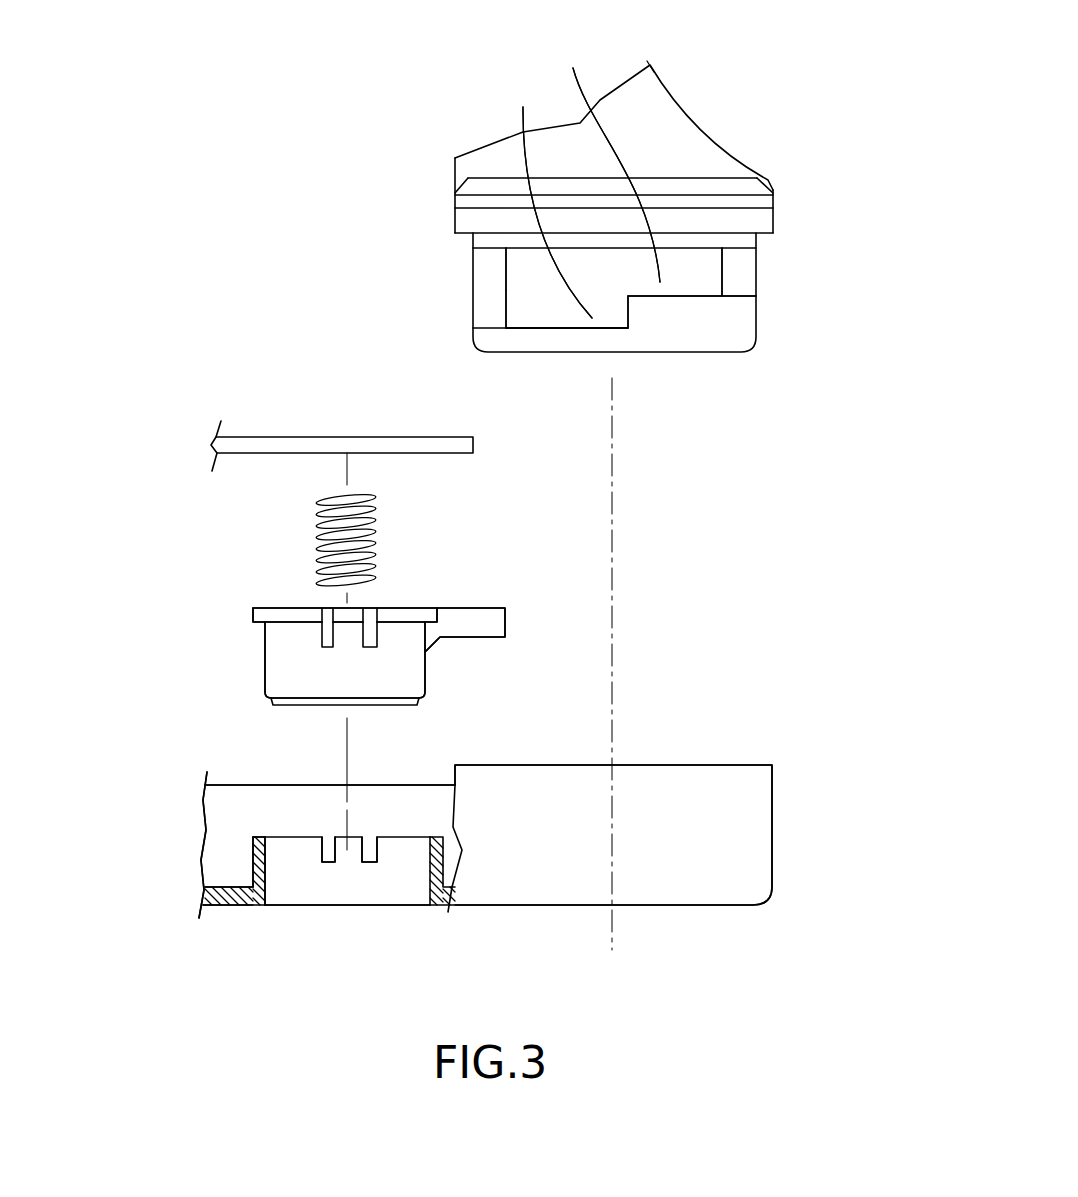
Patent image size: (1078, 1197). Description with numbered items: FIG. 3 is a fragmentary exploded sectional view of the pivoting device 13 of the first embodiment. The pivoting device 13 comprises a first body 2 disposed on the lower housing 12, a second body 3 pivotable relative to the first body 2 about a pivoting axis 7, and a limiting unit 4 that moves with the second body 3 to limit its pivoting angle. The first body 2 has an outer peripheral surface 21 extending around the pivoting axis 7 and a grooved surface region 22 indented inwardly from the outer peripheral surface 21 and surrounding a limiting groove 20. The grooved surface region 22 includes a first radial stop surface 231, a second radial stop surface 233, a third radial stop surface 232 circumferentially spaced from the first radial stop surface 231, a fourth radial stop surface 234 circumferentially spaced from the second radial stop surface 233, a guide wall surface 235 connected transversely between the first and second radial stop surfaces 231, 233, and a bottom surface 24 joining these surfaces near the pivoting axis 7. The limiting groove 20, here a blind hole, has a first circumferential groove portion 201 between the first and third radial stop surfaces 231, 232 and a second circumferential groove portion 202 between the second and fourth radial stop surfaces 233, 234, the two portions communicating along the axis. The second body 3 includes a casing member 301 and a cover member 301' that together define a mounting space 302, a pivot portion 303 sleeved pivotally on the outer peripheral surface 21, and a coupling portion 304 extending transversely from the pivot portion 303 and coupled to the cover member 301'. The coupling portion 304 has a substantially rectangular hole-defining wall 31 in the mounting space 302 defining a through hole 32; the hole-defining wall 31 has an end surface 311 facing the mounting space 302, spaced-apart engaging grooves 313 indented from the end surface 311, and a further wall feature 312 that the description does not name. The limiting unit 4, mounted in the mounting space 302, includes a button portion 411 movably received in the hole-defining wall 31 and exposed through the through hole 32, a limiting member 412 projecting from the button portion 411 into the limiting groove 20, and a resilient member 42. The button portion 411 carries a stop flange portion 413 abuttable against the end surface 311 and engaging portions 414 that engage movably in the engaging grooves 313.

The first body 2 is at (466, 215).
The lower housing 12 is at (657, 110).
The pivoting device 13 is at (298, 295).
The limiting groove 20 is at (576, 25).
The first circumferential groove portion 201 is at (542, 196).
The second circumferential groove portion 202 is at (605, 160).
The outer peripheral surface 21 is at (727, 333).
The grooved surface region 22 is at (593, 330).
The first radial stop surface 231 is at (630, 313).
The third radial stop surface 232 is at (505, 306).
The second radial stop surface 233 is at (722, 270).
The fourth radial stop surface 234 is at (505, 272).
The guide wall surface 235 is at (690, 292).
The bottom surface 24 is at (562, 318).
The cover member 301' is at (342, 402).
The resilient member 42 is at (303, 522).
The limiting unit 4 is at (195, 662).
The button portion 411 is at (417, 683).
The limiting member 412 is at (478, 620).
The stop flange portion 413 is at (412, 615).
The engaging portions 414 is at (367, 642).
The pivoting axis 7 is at (615, 560).
The second body 3 is at (248, 938).
The casing member 301 is at (408, 933).
The mounting space 302 is at (237, 820).
The pivot portion 303 is at (695, 877).
The coupling portion 304 is at (225, 905).
The hole-defining wall 31 is at (267, 877).
The end surface 311 is at (263, 837).
The wall inner surface 312 is at (265, 860).
The engaging grooves 313 is at (330, 862).
The through hole 32 is at (352, 888).